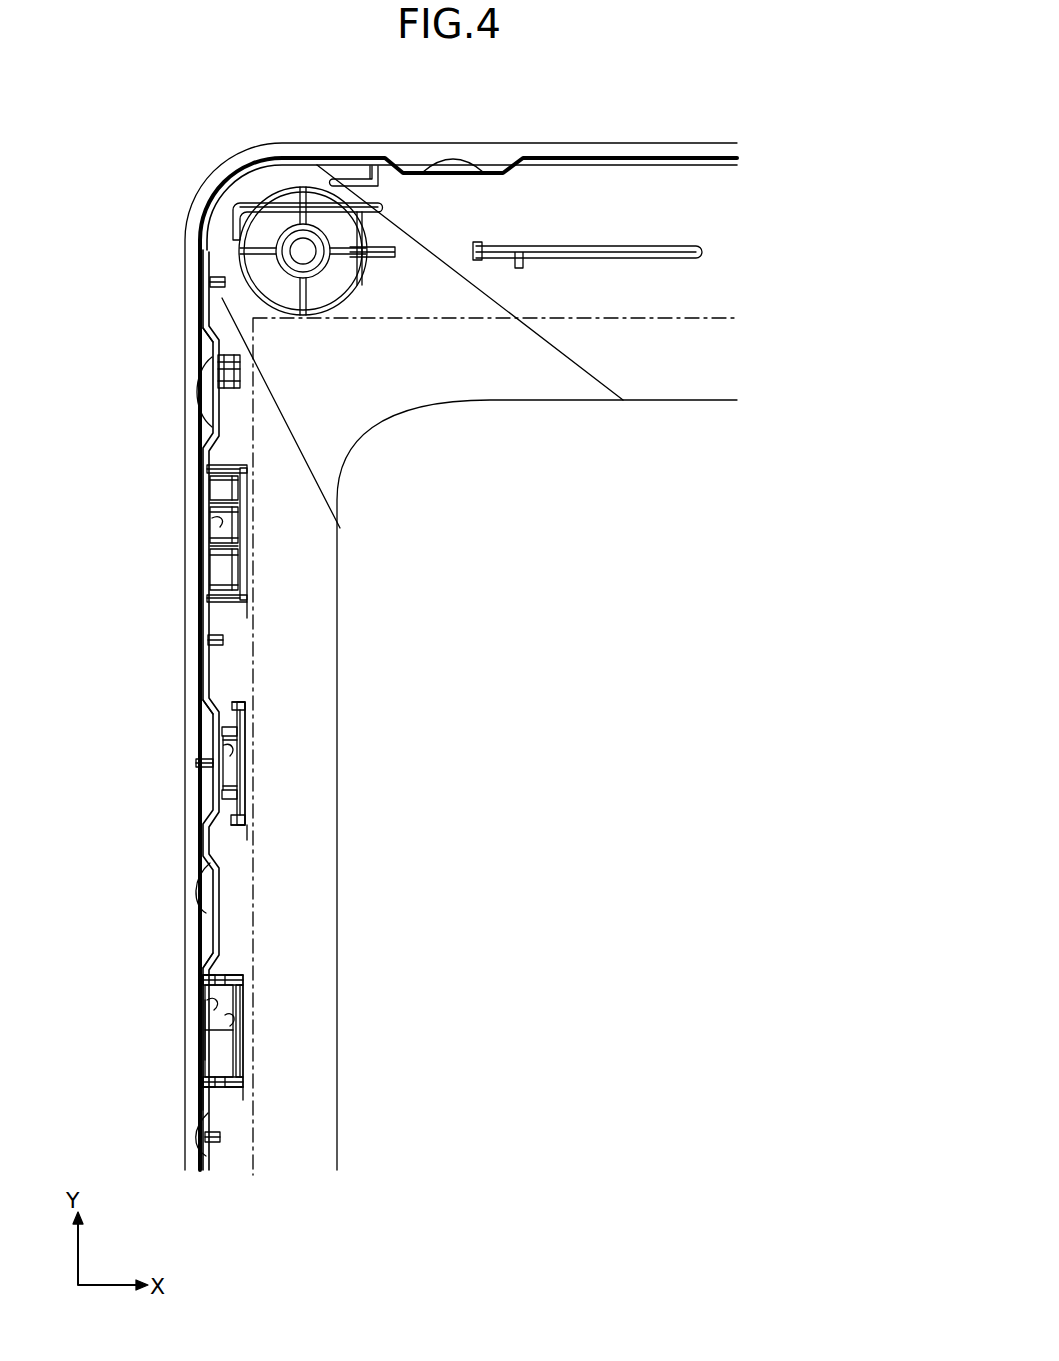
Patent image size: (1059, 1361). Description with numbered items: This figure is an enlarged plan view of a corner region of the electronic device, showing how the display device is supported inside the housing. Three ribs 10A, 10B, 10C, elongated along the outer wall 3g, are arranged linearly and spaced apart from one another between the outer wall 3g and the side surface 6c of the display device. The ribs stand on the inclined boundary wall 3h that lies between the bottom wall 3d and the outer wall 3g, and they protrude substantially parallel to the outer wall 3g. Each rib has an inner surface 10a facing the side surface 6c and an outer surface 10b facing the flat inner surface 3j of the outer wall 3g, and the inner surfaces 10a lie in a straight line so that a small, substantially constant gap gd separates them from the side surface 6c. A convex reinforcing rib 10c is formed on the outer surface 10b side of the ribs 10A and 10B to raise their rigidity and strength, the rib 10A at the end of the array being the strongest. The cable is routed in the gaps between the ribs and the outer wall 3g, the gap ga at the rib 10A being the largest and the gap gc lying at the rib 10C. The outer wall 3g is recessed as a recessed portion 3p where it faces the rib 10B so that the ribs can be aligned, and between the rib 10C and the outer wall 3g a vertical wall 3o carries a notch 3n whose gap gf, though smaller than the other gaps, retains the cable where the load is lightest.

The outer wall 3g is at (682, 150).
The inclined boundary wall 3h is at (563, 192).
The side surface of the display device 6c is at (205, 323).
The gap ga is at (223, 487).
The inner surface of the outer wall 3j is at (225, 512).
The recessed portion 3p is at (212, 779).
The bottom wall 3d is at (695, 468).
The inner surface 10a is at (247, 490).
The outer surface 10b is at (258, 583).
The convex reinforcing rib 10c is at (235, 515).
The rib 10A is at (323, 771).
The rib 10B is at (252, 836).
The rib 10C is at (247, 1082).
The gap gd is at (250, 618).
The gap gf is at (227, 956).
The gap gc is at (212, 1044).
The vertical wall 3o is at (205, 974).
The notch 3n is at (230, 975).